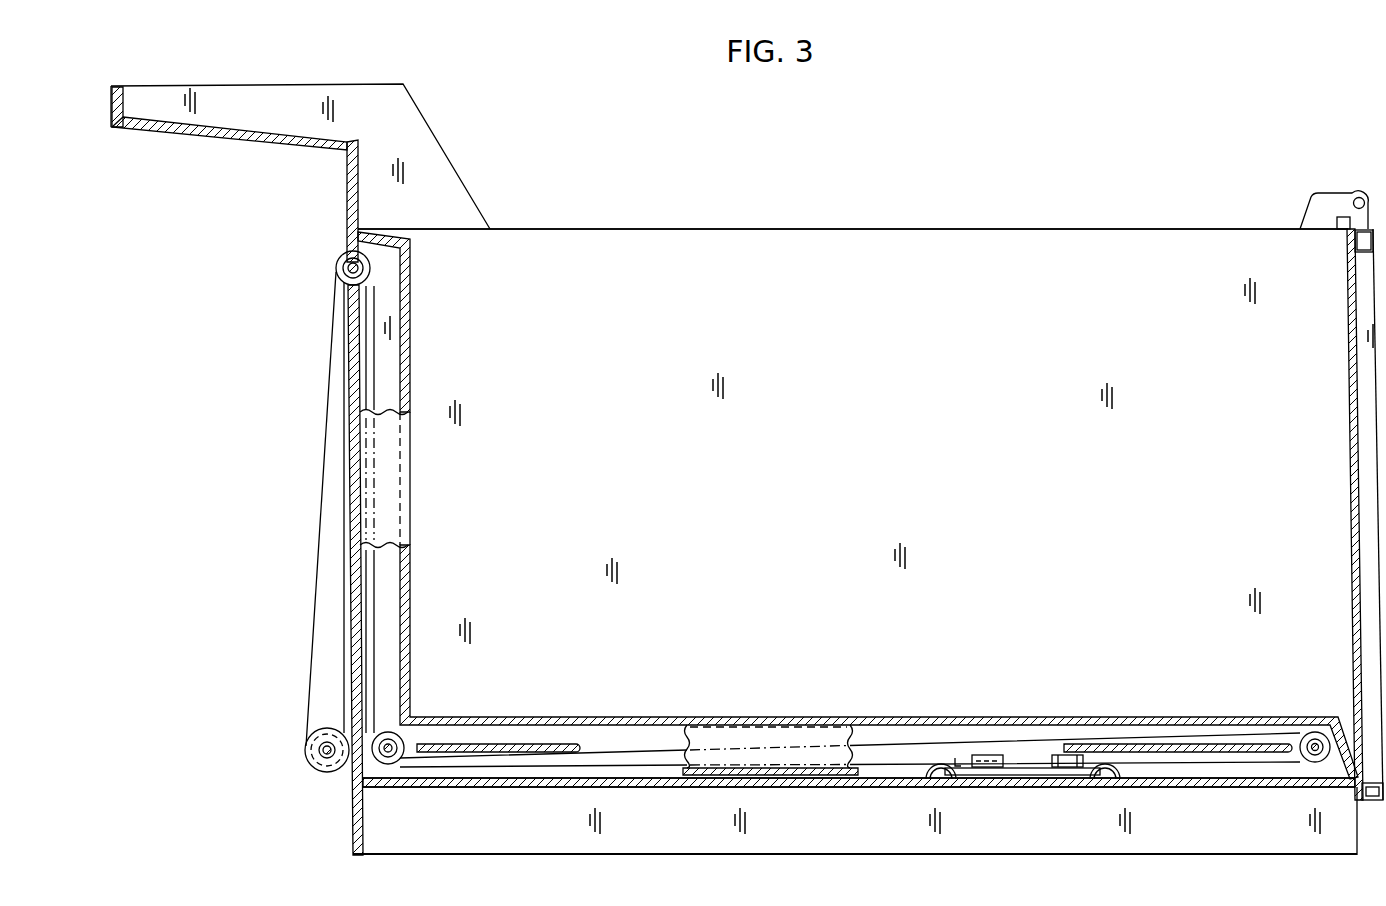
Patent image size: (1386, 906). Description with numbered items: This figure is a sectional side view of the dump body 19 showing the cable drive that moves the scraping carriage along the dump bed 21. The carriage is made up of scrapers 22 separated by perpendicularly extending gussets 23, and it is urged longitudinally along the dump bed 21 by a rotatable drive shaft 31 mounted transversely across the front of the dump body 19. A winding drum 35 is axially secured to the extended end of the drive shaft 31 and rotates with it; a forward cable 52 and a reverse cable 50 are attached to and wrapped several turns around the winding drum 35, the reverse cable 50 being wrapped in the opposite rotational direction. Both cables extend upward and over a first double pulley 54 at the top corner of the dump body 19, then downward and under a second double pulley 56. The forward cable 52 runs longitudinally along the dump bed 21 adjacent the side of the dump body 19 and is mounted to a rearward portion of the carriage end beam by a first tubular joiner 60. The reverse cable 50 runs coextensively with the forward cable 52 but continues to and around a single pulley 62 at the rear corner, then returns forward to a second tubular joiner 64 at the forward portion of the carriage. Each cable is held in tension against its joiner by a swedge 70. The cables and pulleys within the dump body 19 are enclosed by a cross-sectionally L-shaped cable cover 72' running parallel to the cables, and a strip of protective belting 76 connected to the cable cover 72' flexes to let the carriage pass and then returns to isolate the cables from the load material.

The dump body 19 is at (817, 512).
The dump bed 21 is at (762, 778).
The scrapers 22 is at (935, 766).
The gussets 23 is at (1030, 776).
The drive shaft 31 is at (326, 758).
The winding drum 35 is at (300, 750).
The reverse cable 50 is at (321, 492).
The forward cable 52 is at (343, 587).
The first double pulley 54 is at (336, 263).
The second double pulley 56 is at (393, 768).
The first tubular joiner 60 is at (1052, 762).
The single pulley 62 is at (1325, 733).
The second tubular joiner 64 is at (998, 755).
The swedge 70 is at (957, 760).
The cable cover 72' is at (858, 505).
The protective belting 76 is at (710, 768).